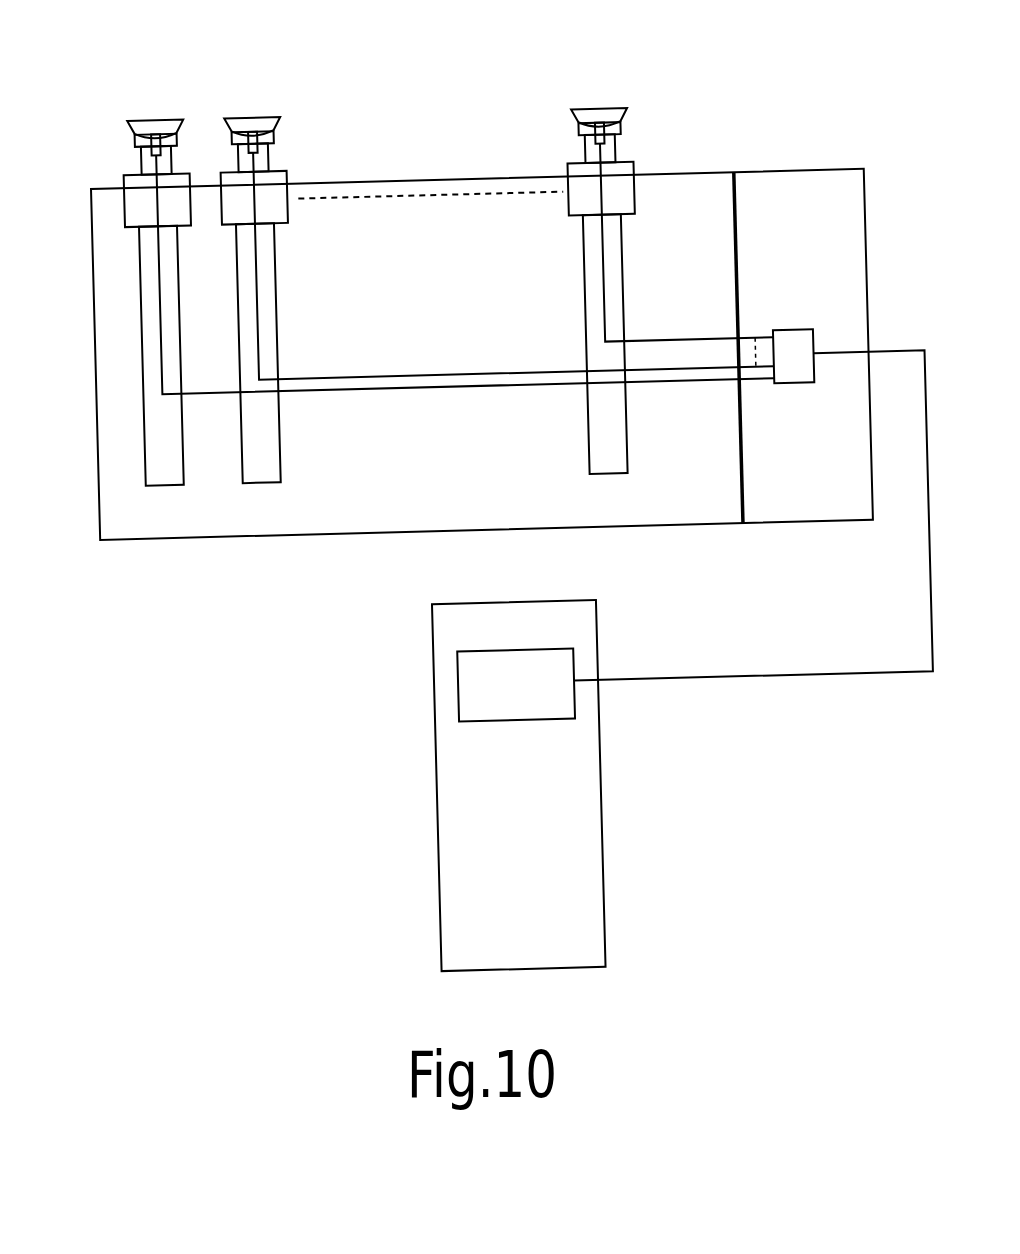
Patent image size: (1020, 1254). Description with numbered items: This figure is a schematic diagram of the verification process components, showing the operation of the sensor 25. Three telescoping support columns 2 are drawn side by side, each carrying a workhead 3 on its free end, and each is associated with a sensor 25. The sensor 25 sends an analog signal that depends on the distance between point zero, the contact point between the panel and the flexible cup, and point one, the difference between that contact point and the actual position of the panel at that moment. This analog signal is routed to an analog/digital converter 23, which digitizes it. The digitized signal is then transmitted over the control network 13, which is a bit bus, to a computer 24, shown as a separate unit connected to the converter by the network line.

The telescoping support columns 2 is at (134, 289).
The workhead 3 is at (154, 129).
The sensor 25 is at (358, 110).
The analog/digital converter 23 is at (788, 381).
The control network 13 is at (714, 693).
The computer 24 is at (465, 696).